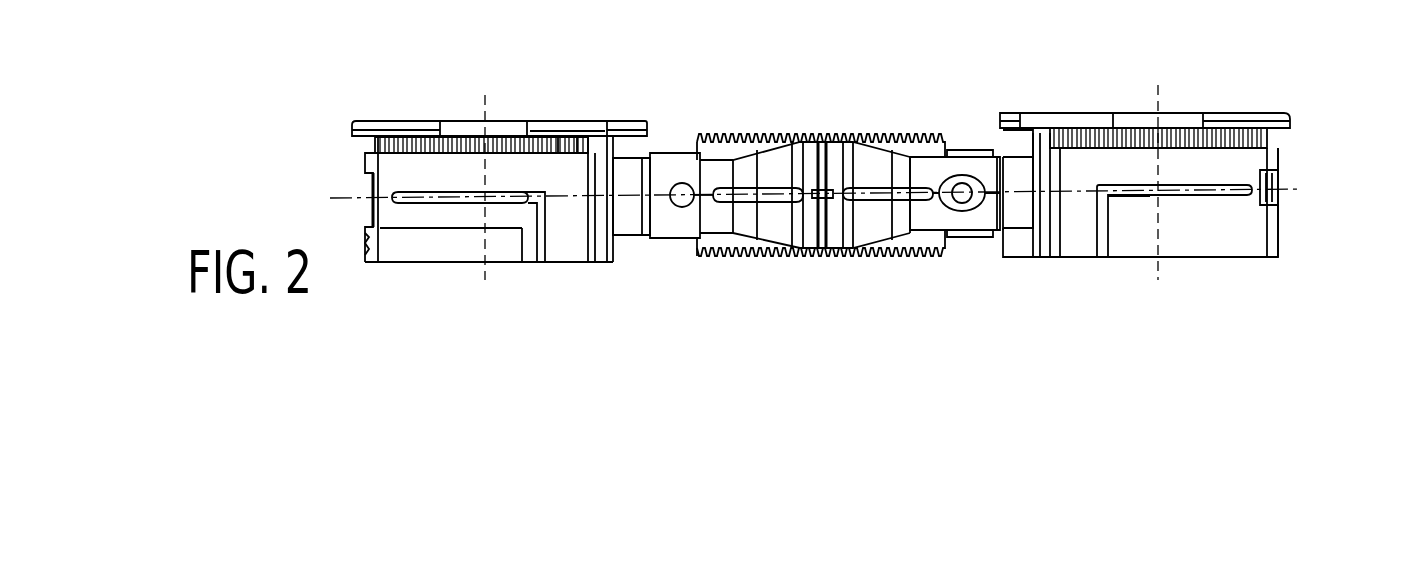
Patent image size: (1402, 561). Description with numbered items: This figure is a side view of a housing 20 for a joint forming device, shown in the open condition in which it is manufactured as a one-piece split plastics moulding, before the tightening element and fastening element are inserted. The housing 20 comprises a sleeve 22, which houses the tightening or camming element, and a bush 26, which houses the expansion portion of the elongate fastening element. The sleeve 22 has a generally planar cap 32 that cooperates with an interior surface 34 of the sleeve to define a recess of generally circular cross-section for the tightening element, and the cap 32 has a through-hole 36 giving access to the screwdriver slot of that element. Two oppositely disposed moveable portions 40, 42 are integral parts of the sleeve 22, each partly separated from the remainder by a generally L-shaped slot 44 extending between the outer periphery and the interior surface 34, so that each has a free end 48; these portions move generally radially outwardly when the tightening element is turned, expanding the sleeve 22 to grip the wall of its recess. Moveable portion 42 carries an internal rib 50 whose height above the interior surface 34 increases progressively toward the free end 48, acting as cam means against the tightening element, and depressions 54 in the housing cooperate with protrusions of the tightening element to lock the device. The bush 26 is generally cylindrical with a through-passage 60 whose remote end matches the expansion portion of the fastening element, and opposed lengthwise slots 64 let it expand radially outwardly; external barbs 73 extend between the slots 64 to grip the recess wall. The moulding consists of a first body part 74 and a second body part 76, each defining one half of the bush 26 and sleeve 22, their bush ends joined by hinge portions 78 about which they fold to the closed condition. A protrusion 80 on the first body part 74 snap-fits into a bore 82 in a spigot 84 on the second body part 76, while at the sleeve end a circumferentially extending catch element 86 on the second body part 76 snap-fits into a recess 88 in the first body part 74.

The housing 20 is at (858, 84).
The sleeve 22 is at (366, 155).
The bush 26 is at (744, 134).
The cap 32 is at (610, 123).
The interior surface 34 is at (413, 167).
The through-hole 36 is at (450, 128).
The moveable portion 40 is at (1192, 240).
The moveable portion 42 is at (470, 218).
The L-shaped slot 44 is at (518, 200).
The free end 48 is at (540, 248).
The rib 50 is at (435, 250).
The depressions 54 is at (577, 143).
The through-passage 60 is at (780, 158).
The lengthwise extending slots 64 is at (775, 202).
The barbs 73 is at (922, 247).
The first body part 74 is at (582, 102).
The second body part 76 is at (1062, 105).
The hinge portions 78 is at (825, 250).
The protrusion 80 is at (682, 183).
The bore 82 is at (964, 175).
The spigot 84 is at (972, 208).
The catch element 86 is at (1277, 192).
The recess 88 is at (373, 190).